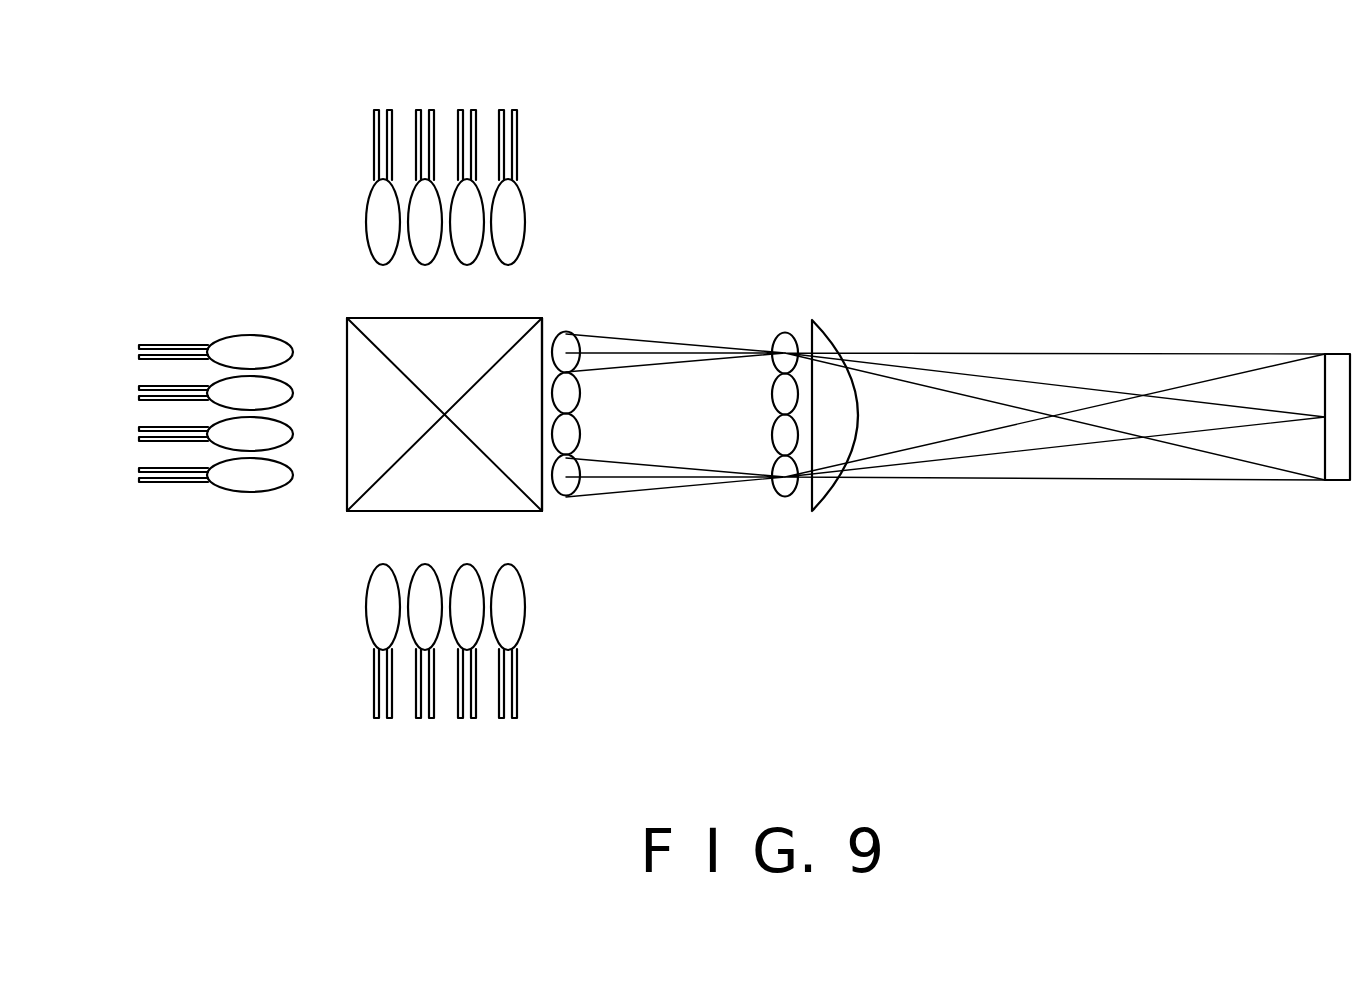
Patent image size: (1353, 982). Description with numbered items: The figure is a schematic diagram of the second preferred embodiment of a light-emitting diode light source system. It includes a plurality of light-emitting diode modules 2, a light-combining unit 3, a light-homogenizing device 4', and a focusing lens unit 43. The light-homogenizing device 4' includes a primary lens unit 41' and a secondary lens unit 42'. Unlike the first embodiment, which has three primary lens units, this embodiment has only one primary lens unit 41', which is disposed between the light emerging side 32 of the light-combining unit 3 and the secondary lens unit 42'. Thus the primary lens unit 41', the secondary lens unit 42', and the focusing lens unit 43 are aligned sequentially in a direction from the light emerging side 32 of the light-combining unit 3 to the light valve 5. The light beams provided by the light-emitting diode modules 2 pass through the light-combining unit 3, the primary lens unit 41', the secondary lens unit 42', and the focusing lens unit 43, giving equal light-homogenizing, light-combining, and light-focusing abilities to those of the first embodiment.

The light-emitting diode module 2 is at (431, 85).
The light-combining unit 3 is at (375, 302).
The light emerging side 32 is at (543, 512).
The light-homogenizing device 4' is at (728, 375).
The primary lens unit 41' is at (591, 377).
The secondary lens unit 42' is at (806, 364).
The focusing lens unit 43 is at (820, 497).
The light valve 5 is at (1339, 365).